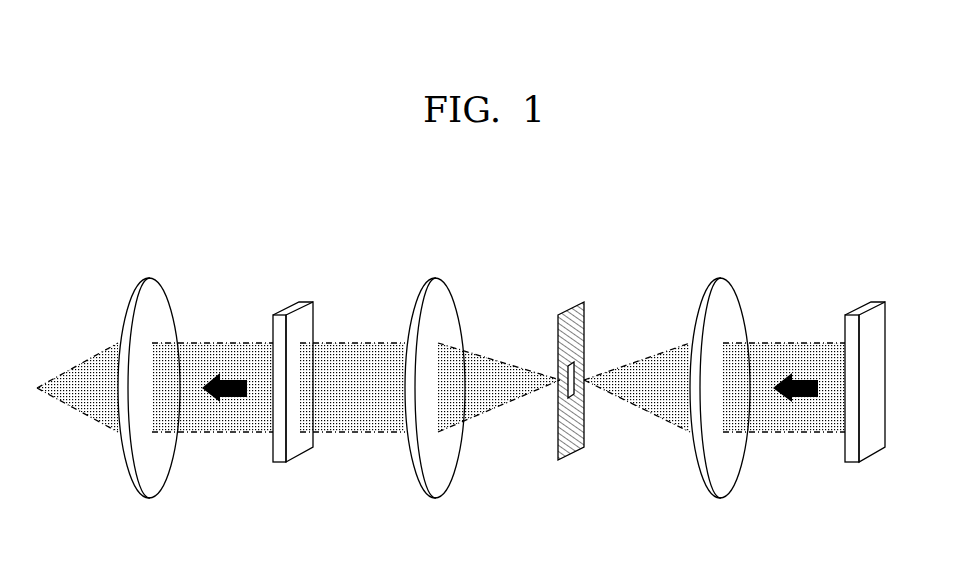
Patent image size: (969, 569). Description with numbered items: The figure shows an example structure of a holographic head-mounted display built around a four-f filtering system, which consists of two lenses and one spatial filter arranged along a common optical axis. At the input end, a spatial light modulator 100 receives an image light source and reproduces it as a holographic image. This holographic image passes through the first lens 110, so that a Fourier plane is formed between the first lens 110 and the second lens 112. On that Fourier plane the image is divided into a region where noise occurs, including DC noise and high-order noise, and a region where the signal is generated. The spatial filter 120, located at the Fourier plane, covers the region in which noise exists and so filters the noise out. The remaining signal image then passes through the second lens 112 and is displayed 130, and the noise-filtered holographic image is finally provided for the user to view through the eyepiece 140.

The spatial light modulator 100 is at (858, 303).
The first 4-f lens 110 is at (720, 278).
The second lens 112 is at (436, 278).
The spatial filter 120 is at (571, 315).
The displayed signal image 130 is at (286, 303).
The eyepiece 140 is at (148, 278).